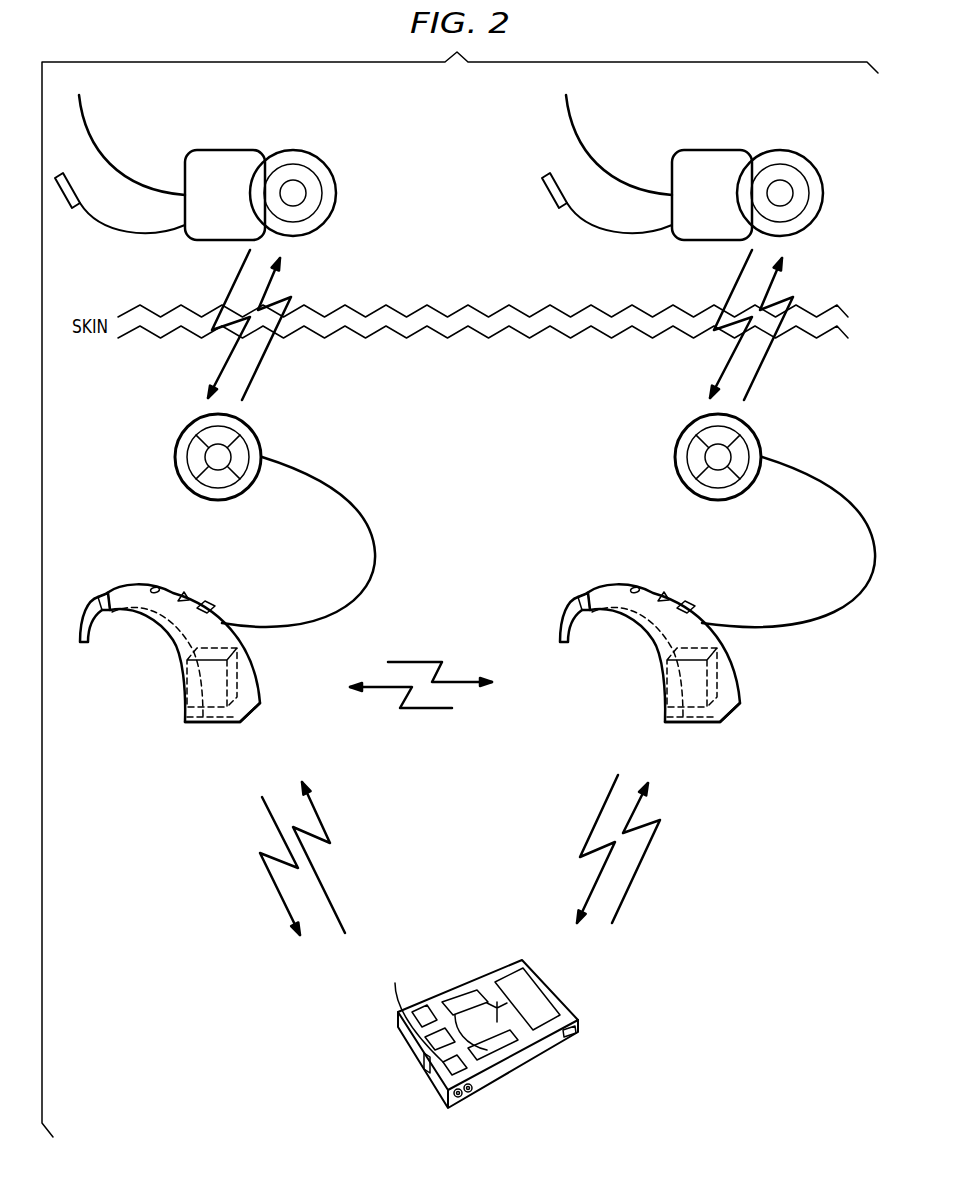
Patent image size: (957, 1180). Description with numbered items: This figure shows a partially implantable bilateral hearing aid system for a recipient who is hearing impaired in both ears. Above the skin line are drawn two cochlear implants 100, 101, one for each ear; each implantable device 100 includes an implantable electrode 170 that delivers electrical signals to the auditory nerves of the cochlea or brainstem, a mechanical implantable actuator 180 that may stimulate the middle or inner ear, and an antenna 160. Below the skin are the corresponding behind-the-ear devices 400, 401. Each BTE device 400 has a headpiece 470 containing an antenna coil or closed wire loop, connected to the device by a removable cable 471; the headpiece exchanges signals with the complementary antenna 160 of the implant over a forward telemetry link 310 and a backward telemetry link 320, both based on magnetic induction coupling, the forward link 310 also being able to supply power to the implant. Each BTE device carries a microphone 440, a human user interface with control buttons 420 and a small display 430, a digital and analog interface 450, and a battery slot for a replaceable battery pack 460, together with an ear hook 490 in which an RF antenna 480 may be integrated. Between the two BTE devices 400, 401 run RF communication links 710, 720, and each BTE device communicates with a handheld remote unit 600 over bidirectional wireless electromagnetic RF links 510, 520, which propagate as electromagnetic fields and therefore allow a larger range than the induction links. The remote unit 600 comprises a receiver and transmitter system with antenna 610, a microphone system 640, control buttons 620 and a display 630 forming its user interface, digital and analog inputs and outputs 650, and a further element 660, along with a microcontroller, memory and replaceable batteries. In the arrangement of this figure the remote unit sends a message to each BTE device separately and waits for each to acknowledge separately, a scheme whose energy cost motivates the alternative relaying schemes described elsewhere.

The implantable device 100 is at (212, 252).
The second cochlear implant 101 is at (699, 252).
The antenna 160 is at (292, 150).
The implantable electrode 170 is at (85, 117).
The mechanical implantable actuator 180 is at (55, 193).
The forward telemetry link 310 is at (267, 353).
The backward telemetry link 320 is at (217, 380).
The behind-the-ear device 400 is at (178, 773).
The second behind-the-ear device 401 is at (740, 775).
The control buttons 420 is at (184, 592).
The small display 430 is at (210, 602).
The microphone 440 is at (155, 587).
The digital and analog interface 450 is at (245, 708).
The battery pack 460 is at (212, 683).
The headpiece 470 is at (187, 433).
The cable 471 is at (373, 553).
The antenna 480 is at (102, 595).
The ear hook 490 is at (81, 646).
The wireless RF link 510 is at (275, 887).
The wireless RF link 520 is at (328, 893).
The remote unit 600 is at (333, 1062).
The antenna 610 is at (499, 1023).
The control buttons 620 is at (455, 1007).
The display 630 is at (528, 992).
The microphone system 640 is at (575, 1035).
The digital and analog inputs and outputs 650 is at (460, 1097).
The connector 660 is at (428, 1058).
The RF communication link 710 is at (420, 660).
The RF communication link 720 is at (425, 710).